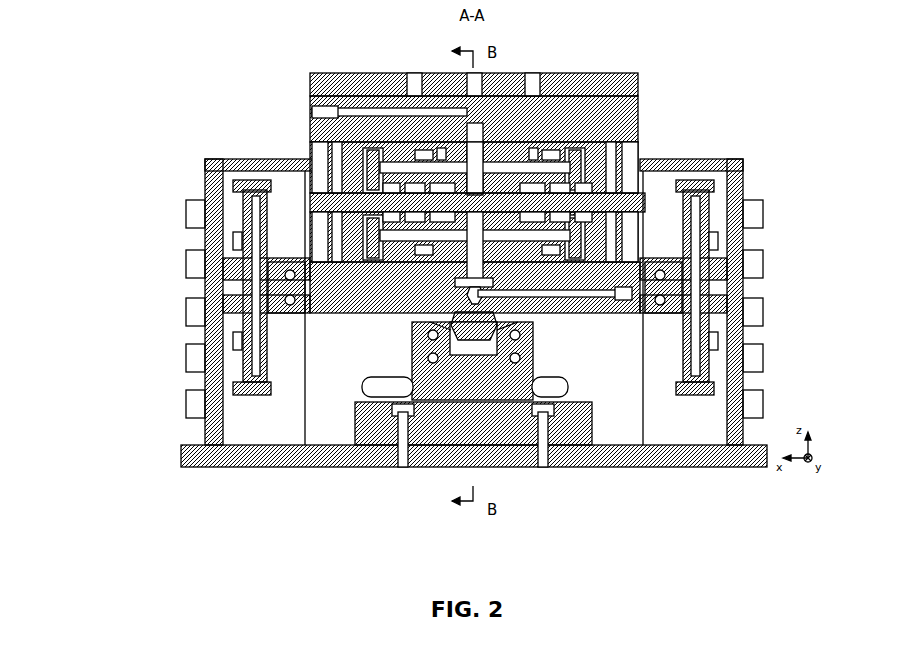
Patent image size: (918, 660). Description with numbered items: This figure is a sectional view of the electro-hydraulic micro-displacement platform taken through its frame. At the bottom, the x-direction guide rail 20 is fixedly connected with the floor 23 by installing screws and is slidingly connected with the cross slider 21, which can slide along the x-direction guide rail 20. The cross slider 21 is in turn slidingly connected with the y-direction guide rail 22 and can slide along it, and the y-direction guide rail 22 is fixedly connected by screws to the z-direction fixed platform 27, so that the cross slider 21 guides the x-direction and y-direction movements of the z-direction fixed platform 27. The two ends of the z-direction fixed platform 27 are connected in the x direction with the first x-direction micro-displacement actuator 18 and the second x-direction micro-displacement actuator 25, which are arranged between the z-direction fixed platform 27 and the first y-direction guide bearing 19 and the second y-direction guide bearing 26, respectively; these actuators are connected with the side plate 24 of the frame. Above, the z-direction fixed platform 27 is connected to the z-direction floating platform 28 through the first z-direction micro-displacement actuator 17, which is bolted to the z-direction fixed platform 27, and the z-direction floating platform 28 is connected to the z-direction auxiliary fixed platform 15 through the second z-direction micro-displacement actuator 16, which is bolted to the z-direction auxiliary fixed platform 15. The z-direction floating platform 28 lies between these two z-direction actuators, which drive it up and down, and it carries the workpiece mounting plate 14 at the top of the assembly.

The workpiece mounting plate 14 is at (615, 84).
The z-direction auxiliary fixed platform 15 is at (615, 124).
The second z-direction micro-displacement actuator 16 is at (585, 158).
The first z-direction micro-displacement actuator 17 is at (645, 192).
The first x-direction micro-displacement actuator 18 is at (712, 212).
The first y-direction guide bearing 19 is at (733, 320).
The x-direction guide rail 20 is at (575, 433).
The cross slider 21 is at (480, 372).
The y-direction guide rail 22 is at (475, 315).
The floor 23 is at (352, 468).
The side plate 24 is at (205, 355).
The second x-direction micro-displacement actuator 25 is at (254, 296).
The second y-direction guide bearing 26 is at (252, 268).
The z-direction fixed platform 27 is at (318, 258).
The z-direction floating platform 28 is at (318, 176).